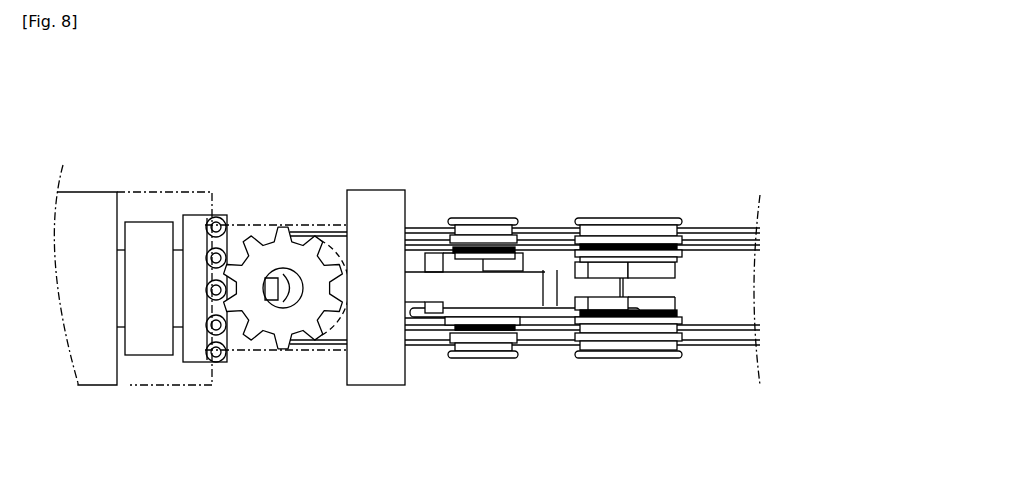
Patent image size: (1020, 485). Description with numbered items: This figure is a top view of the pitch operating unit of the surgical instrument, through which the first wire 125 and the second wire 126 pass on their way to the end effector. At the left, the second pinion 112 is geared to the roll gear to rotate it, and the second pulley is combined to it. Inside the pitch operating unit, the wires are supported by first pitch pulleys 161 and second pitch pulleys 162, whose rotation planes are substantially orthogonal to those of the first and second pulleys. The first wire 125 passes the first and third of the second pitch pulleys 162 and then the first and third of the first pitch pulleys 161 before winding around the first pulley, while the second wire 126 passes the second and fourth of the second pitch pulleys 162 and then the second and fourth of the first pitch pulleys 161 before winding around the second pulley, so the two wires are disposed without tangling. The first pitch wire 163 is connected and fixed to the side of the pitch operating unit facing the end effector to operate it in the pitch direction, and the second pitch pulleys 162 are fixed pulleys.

The second pinion 112 is at (280, 225).
The first wire 125 is at (565, 222).
The second wire 126 is at (533, 222).
The first pitch pulleys 161 is at (483, 218).
The second pitch pulleys 162 is at (643, 218).
The first pitch wire 163 is at (525, 358).